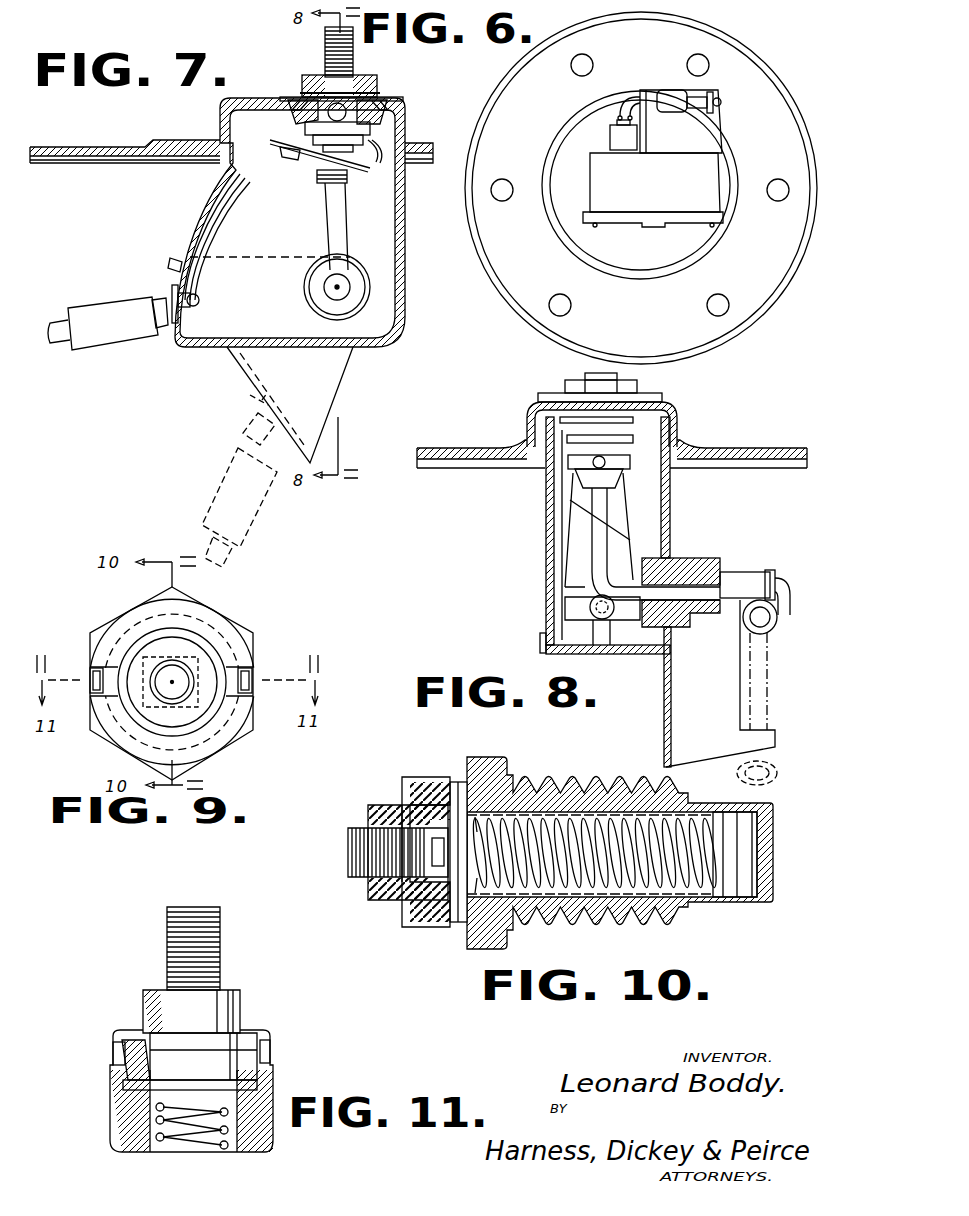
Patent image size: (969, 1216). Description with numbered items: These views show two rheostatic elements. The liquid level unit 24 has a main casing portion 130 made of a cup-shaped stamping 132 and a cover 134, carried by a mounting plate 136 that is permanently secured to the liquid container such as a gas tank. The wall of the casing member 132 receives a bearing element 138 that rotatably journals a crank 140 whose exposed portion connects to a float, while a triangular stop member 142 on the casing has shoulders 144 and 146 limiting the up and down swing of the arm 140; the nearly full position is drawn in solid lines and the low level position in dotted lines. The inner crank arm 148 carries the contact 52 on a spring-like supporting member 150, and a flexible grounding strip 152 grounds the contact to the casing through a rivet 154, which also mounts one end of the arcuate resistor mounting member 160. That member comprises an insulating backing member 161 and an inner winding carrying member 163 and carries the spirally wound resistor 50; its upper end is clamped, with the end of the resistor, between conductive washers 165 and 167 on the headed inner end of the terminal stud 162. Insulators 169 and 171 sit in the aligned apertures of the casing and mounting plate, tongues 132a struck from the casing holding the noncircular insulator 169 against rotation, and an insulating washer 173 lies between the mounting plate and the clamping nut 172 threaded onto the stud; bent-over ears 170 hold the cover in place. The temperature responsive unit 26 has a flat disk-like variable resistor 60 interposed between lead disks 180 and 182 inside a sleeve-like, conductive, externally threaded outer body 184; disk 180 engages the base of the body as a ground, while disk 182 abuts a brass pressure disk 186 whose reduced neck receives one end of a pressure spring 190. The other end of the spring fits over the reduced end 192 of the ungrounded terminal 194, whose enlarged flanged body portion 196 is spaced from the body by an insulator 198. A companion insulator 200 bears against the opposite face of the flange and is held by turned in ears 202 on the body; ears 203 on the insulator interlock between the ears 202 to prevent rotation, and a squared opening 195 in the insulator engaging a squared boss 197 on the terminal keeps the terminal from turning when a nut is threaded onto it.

In FIG. 7, the liquid level unit 24 is at (445, 285).
In FIG. 6, the liquid level unit 24 is at (806, 326).
In FIG. 8, the liquid level unit 24 is at (773, 515).
In FIG. 10, the temperature responsive unit 26 is at (611, 950).
In FIG. 9, the temperature responsive unit 26 is at (303, 673).
In FIG. 7, the resistor 50 is at (170, 263).
In FIG. 8, the resistor 50 is at (582, 520).
In FIG. 7, the contact 52 is at (272, 178).
In FIG. 10, the variable resistor 60 is at (740, 862).
In FIG. 6, the main casing portion 130 is at (725, 178).
In FIG. 8, the main casing portion 130 is at (680, 545).
In FIG. 7, the cup-shaped stamping 132 is at (397, 192).
In FIG. 8, the cup-shaped stamping 132 is at (666, 493).
In FIG. 7, the tongues 132a is at (300, 120).
In FIG. 8, the cover 134 is at (583, 538).
In FIG. 7, the mounting plate 136 is at (122, 143).
In FIG. 6, the mounting plate 136 is at (733, 73).
In FIG. 8, the mounting plate 136 is at (670, 430).
In FIG. 6, the bearing element 138 is at (610, 133).
In FIG. 8, the bearing element 138 is at (683, 570).
In FIG. 7, the crank 140 is at (118, 328).
In FIG. 6, the crank 140 is at (668, 90).
In FIG. 8, the crank 140 is at (767, 633).
In FIG. 7, the stop member 142 is at (240, 370).
In FIG. 6, the stop member 142 is at (713, 127).
In FIG. 8, the stop member 142 is at (757, 570).
In FIG. 8, the shoulder 144 is at (770, 597).
In FIG. 8, the shoulder 146 is at (770, 730).
In FIG. 7, the inner crank arm 148 is at (325, 227).
In FIG. 8, the inner crank arm 148 is at (587, 562).
In FIG. 7, the spring-like supporting member 150 is at (307, 170).
In FIG. 7, the flexible grounding strip 152 is at (373, 223).
In FIG. 8, the flexible grounding strip 152 is at (603, 654).
In FIG. 7, the rivet 154 is at (200, 297).
In FIG. 8, the rivet 154 is at (573, 607).
In FIG. 7, the resistor mounting member 160 is at (407, 127).
In FIG. 8, the resistor mounting member 160 is at (570, 503).
In FIG. 7, the insulating backing member 161 is at (205, 193).
In FIG. 8, the insulating backing member 161 is at (633, 487).
In FIG. 7, the terminal stud 162 is at (353, 62).
In FIG. 8, the terminal stud 162 is at (587, 372).
In FIG. 7, the inner winding carrying member 163 is at (187, 233).
In FIG. 8, the inner winding carrying member 163 is at (733, 448).
In FIG. 7, the conductive washer 165 is at (283, 150).
In FIG. 8, the conductive washer 165 is at (570, 430).
In FIG. 7, the conductive washer 167 is at (377, 165).
In FIG. 7, the insulator 169 is at (403, 113).
In FIG. 8, the insulator 169 is at (663, 407).
In FIG. 6, the ears 170 is at (653, 227).
In FIG. 8, the ears 170 is at (540, 643).
In FIG. 7, the insulator 171 is at (438, 80).
In FIG. 7, the clamping nut 172 is at (377, 88).
In FIG. 8, the clamping nut 172 is at (563, 383).
In FIG. 7, the insulating washer 173 is at (403, 99).
In FIG. 8, the insulating washer 173 is at (537, 400).
In FIG. 10, the lead disk 180 is at (777, 887).
In FIG. 10, the lead disk 182 is at (760, 900).
In FIG. 10, the outer body 184 is at (472, 810).
In FIG. 11, the outer body 184 is at (110, 1120).
In FIG. 10, the pressure disk 186 is at (733, 900).
In FIG. 10, the pressure spring 190 is at (530, 887).
In FIG. 11, the pressure spring 190 is at (237, 1113).
In FIG. 10, the reduced end 192 is at (510, 772).
In FIG. 10, the ungrounded terminal 194 is at (352, 847).
In FIG. 9, the ungrounded terminal 194 is at (180, 680).
In FIG. 11, the ungrounded terminal 194 is at (220, 962).
In FIG. 9, the squared opening 195 is at (193, 612).
In FIG. 10, the enlarged flanged body portion 196 is at (443, 772).
In FIG. 10, the squared boss 197 is at (405, 907).
In FIG. 10, the insulator 198 is at (455, 800).
In FIG. 10, the companion insulator 200 is at (372, 816).
In FIG. 9, the companion insulator 200 is at (207, 658).
In FIG. 11, the companion insulator 200 is at (227, 1000).
In FIG. 10, the turned in ears 202 is at (407, 783).
In FIG. 9, the turned in ears 202 is at (207, 630).
In FIG. 11, the turned in ears 202 is at (250, 1028).
In FIG. 9, the ears 203 is at (92, 676).
In FIG. 11, the ears 203 is at (265, 1047).